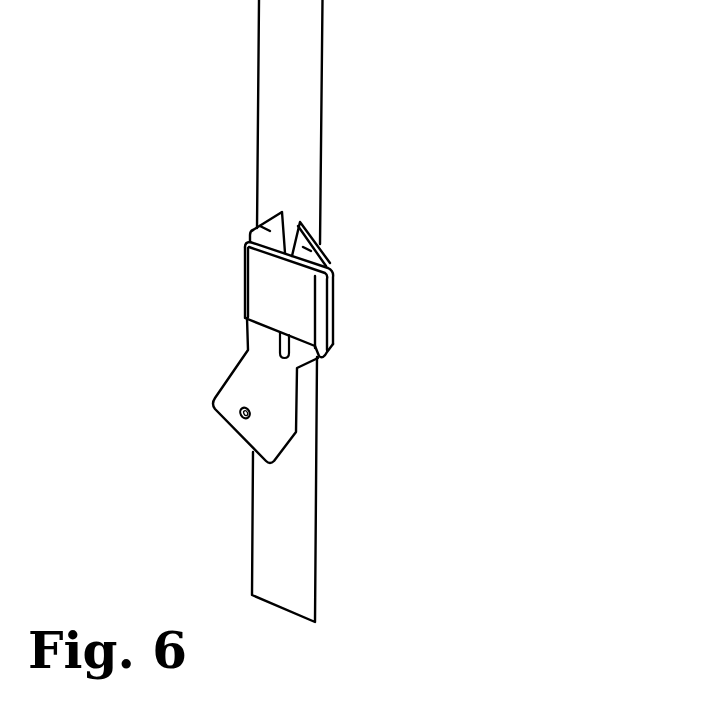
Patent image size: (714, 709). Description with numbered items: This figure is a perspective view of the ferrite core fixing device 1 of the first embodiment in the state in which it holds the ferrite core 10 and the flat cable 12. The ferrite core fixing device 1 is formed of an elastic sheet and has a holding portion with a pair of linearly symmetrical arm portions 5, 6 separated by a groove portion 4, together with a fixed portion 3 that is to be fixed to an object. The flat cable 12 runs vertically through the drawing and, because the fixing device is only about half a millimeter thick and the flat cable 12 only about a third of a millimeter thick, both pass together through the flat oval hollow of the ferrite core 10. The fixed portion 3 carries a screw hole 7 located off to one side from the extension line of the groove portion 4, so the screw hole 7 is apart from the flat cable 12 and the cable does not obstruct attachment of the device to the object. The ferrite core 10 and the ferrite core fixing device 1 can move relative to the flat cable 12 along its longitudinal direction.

The ferrite core fixing device 1 is at (232, 362).
The fixed portion 3 is at (242, 432).
The groove portion 4 is at (291, 347).
The arm portion 5 is at (322, 242).
The arm portion 6 is at (268, 228).
The screw hole 7 is at (240, 413).
The ferrite core 10 is at (253, 290).
The flat cable 12 is at (310, 42).